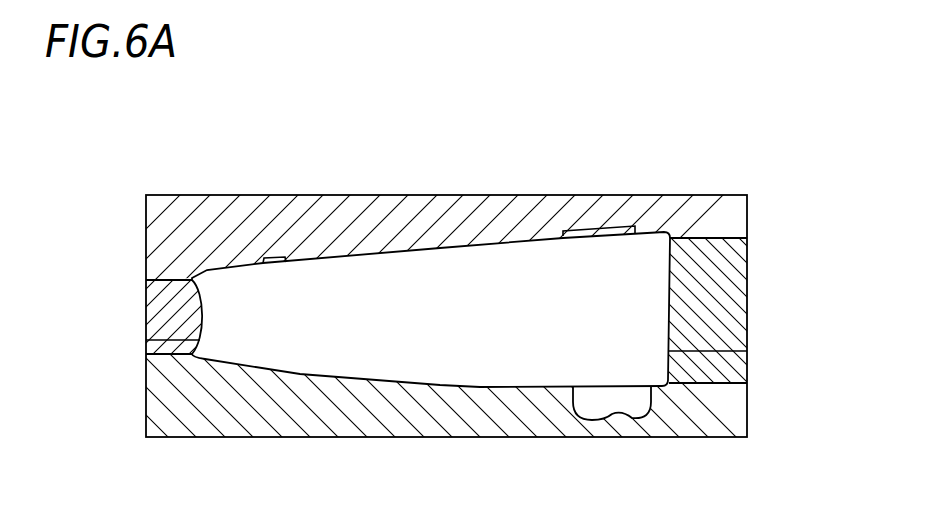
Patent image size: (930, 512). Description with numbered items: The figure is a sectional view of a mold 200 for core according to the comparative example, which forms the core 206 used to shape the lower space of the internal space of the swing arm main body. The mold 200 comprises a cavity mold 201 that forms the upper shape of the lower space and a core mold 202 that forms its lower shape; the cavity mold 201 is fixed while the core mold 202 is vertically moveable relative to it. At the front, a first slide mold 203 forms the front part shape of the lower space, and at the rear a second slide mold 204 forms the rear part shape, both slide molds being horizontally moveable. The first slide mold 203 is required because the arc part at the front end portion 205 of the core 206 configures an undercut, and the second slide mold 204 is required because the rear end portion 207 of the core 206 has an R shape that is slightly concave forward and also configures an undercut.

The mold for core 200 is at (176, 135).
The cavity mold 201 is at (374, 430).
The core mold 202 is at (382, 217).
The first slide mold 203 is at (172, 307).
The second slide mold 204 is at (712, 300).
The front end portion of the core 205 is at (146, 340).
The core 206 is at (450, 290).
The rear end portion of the core 207 is at (672, 352).